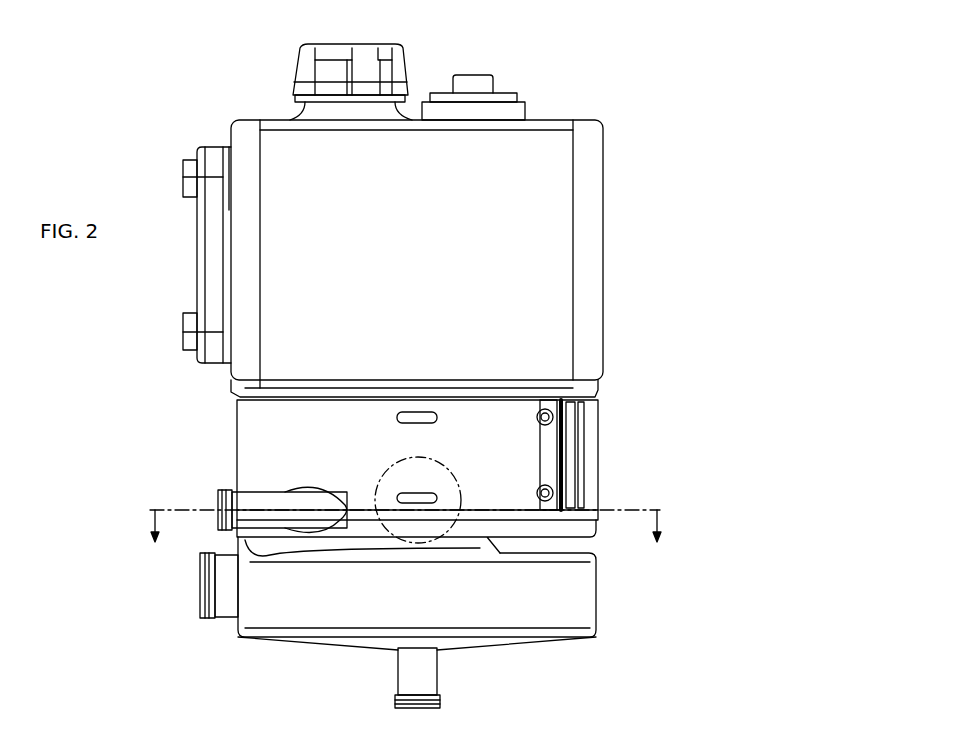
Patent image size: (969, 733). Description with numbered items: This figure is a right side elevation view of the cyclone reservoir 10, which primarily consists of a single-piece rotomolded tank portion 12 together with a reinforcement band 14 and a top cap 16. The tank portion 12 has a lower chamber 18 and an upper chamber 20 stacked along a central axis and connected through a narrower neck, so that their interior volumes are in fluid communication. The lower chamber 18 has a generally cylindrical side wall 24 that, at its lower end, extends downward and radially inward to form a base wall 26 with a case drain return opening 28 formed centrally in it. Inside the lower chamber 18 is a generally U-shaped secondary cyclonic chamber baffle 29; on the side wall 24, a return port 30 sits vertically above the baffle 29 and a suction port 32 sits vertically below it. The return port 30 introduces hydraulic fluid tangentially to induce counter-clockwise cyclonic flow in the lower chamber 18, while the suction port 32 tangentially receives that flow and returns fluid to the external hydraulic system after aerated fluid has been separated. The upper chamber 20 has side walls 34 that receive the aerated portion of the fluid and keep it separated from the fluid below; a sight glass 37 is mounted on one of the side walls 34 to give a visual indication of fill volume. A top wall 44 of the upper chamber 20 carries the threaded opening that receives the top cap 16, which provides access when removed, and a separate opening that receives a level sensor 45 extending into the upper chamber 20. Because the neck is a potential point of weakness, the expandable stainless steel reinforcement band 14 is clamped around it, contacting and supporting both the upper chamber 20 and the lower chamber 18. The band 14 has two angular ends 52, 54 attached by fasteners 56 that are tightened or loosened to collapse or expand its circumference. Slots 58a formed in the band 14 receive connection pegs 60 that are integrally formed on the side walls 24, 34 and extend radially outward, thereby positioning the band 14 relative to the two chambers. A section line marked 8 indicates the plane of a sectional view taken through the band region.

The section line 8- 8 is at (406, 541).
The cyclone reservoir 10 is at (644, 76).
The tank portion 12 is at (258, 610).
The reinforcement band 14 is at (592, 448).
The top cap 16 is at (300, 68).
The lower chamber 18 is at (575, 597).
The upper chamber 20 is at (555, 245).
The side wall 24 is at (352, 598).
The base wall 26 is at (495, 652).
The case drain return opening 28 is at (410, 683).
The secondary cyclonic chamber baffle 29 is at (270, 555).
The return port 30 is at (222, 497).
The suction port 32 is at (198, 585).
The side walls 34 is at (418, 235).
The sight glass 37 is at (205, 256).
The top wall 44 is at (540, 118).
The level sensor 45 is at (470, 88).
The angular end 52 is at (548, 452).
The angular end 54 is at (583, 480).
The fasteners 56 is at (545, 409).
The slots 58a is at (414, 412).
The connection pegs 60 is at (395, 497).